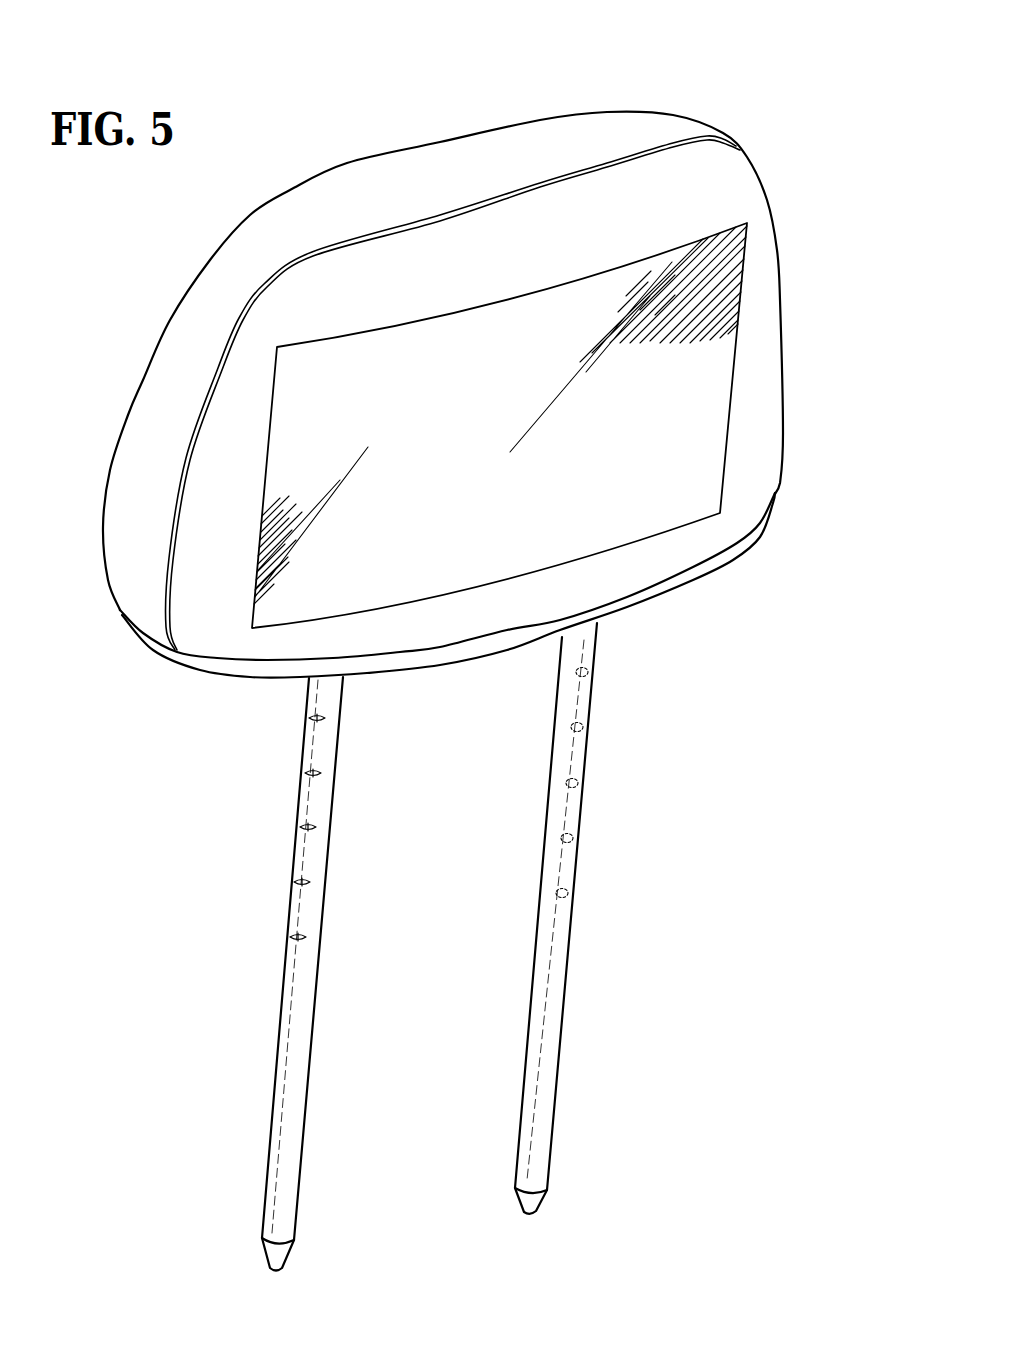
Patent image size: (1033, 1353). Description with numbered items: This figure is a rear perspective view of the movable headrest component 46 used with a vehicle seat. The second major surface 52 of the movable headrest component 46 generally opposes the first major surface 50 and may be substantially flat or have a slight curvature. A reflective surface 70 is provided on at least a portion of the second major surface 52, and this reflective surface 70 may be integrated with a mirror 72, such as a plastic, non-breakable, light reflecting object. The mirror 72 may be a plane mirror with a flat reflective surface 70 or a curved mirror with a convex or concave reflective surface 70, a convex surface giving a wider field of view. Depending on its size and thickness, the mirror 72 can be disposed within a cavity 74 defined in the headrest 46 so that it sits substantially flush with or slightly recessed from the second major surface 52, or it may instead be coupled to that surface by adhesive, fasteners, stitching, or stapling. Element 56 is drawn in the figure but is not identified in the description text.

The movable headrest component 46 is at (723, 88).
The first major surface 50 is at (162, 400).
The second major surface 52 is at (570, 250).
The bottom surface of cushion 56 is at (145, 473).
The reflective surface 70 is at (343, 570).
The mirror 72 is at (735, 397).
The cavity 74 is at (237, 557).